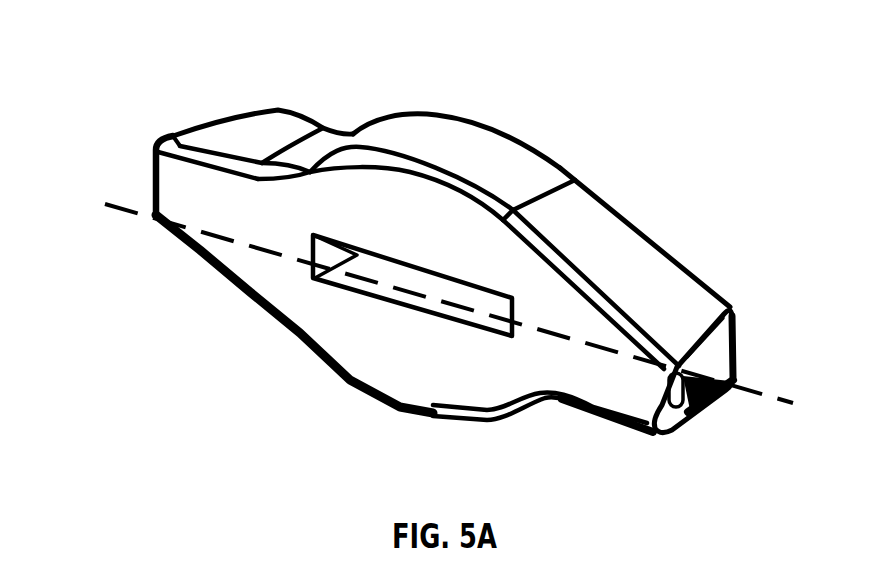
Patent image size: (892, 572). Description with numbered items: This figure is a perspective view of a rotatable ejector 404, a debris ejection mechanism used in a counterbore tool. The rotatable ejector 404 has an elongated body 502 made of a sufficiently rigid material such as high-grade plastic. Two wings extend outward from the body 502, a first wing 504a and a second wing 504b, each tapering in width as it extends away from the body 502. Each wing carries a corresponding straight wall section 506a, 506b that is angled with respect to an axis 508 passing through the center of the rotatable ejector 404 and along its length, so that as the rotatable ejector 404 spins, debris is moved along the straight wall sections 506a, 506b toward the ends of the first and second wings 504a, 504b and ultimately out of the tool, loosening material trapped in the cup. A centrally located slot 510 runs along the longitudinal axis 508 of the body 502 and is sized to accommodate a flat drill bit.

The rotatable ejector 404 is at (136, 85).
The body 502 is at (453, 232).
The first wing 504a is at (602, 402).
The second wing 504b is at (237, 205).
The straight wall section 506a is at (640, 270).
The straight wall section 506b is at (223, 273).
The axis 508 is at (747, 390).
The slot 510 is at (397, 308).